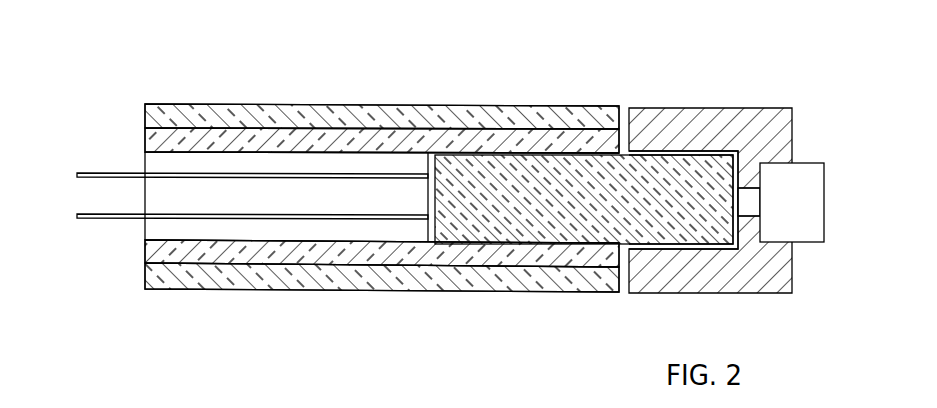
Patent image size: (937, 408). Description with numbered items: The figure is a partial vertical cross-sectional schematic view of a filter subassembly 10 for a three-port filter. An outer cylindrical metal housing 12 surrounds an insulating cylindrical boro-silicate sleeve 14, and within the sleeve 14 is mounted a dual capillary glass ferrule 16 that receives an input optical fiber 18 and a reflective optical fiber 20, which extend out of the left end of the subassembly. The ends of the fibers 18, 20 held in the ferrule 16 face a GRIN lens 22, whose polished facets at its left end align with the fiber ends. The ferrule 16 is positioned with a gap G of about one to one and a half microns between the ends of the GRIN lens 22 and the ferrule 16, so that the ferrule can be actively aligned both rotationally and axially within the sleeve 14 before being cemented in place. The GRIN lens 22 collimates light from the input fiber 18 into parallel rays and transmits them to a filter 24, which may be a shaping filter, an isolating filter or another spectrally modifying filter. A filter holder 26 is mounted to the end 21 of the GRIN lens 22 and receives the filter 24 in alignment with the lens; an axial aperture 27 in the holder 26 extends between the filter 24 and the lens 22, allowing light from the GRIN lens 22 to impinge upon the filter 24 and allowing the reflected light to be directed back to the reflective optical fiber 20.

The filter subassembly 10 is at (576, 55).
The outer cylindrical metal housing 12 is at (338, 105).
The insulating cylindrical boro-silicate sleeve 14 is at (234, 138).
The dual capillary glass ferrule 16 is at (236, 242).
The input optical fiber 18 is at (113, 170).
The reflective optical fiber 20 is at (132, 222).
The gap G is at (432, 245).
The GRIN lens 22 is at (505, 145).
The filter 24 is at (825, 176).
The filter holder 26 is at (745, 92).
The end of GRIN lens 21 is at (669, 250).
The axial aperture 27 is at (747, 220).